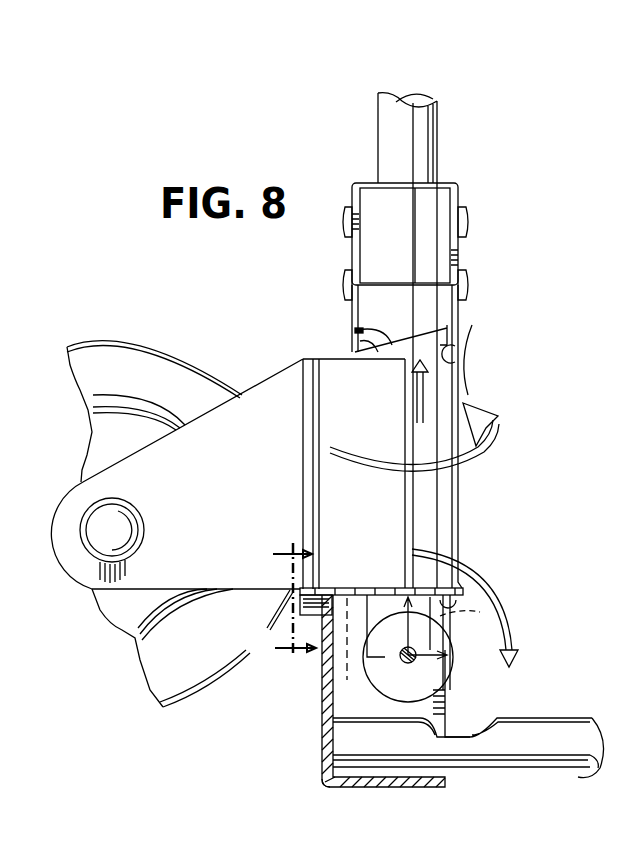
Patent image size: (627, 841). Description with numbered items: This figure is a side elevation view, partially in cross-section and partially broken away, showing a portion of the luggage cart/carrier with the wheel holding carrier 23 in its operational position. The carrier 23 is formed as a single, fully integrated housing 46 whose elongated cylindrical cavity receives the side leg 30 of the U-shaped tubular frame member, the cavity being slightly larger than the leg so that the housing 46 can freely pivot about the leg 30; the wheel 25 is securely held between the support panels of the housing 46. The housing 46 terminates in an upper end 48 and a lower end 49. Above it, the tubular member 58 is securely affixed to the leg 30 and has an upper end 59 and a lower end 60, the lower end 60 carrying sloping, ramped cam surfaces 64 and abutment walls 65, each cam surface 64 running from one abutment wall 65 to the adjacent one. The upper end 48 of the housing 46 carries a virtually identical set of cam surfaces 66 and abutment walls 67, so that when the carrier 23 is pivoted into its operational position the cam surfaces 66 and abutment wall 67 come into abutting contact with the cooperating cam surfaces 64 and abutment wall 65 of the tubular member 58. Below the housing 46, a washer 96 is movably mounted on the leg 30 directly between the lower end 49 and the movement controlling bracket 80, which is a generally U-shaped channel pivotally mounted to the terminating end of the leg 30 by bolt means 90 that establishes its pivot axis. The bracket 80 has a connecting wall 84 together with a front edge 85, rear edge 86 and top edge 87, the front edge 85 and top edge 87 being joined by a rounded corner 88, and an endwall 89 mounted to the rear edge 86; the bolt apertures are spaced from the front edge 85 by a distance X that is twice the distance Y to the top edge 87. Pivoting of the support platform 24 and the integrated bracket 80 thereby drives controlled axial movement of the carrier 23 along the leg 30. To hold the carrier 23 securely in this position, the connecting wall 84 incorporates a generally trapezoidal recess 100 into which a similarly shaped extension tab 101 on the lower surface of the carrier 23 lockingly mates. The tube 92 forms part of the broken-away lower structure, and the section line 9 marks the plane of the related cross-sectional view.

The section line 9- 9 is at (285, 602).
The wheel holding carrier 23 is at (272, 393).
The support platform 24 is at (565, 733).
The wheel 25 is at (78, 388).
The side leg 30 is at (422, 135).
The housing 46 is at (438, 482).
The upper end 48 is at (442, 390).
The lower end 49 is at (436, 597).
The tubular member 58 is at (440, 251).
The upper end 59 is at (390, 183).
The lower end 60 is at (417, 319).
The cam surface 64 is at (455, 337).
The abutment wall 65 is at (456, 364).
The cam surface 66 is at (357, 330).
The abutment wall 67 is at (380, 352).
The movement controlling bracket 80 is at (320, 728).
The connecting wall 84 is at (322, 690).
The front edge 85 is at (345, 590).
The rear edge 86 is at (320, 776).
The top edge 87 is at (447, 712).
The rounded corner 88 is at (462, 620).
The endwall 89 is at (428, 780).
The bolt means 90 is at (405, 660).
The tube wall 92 is at (378, 752).
The washer 96 is at (397, 588).
The recess 100 is at (354, 640).
The extension tab 101 is at (315, 588).